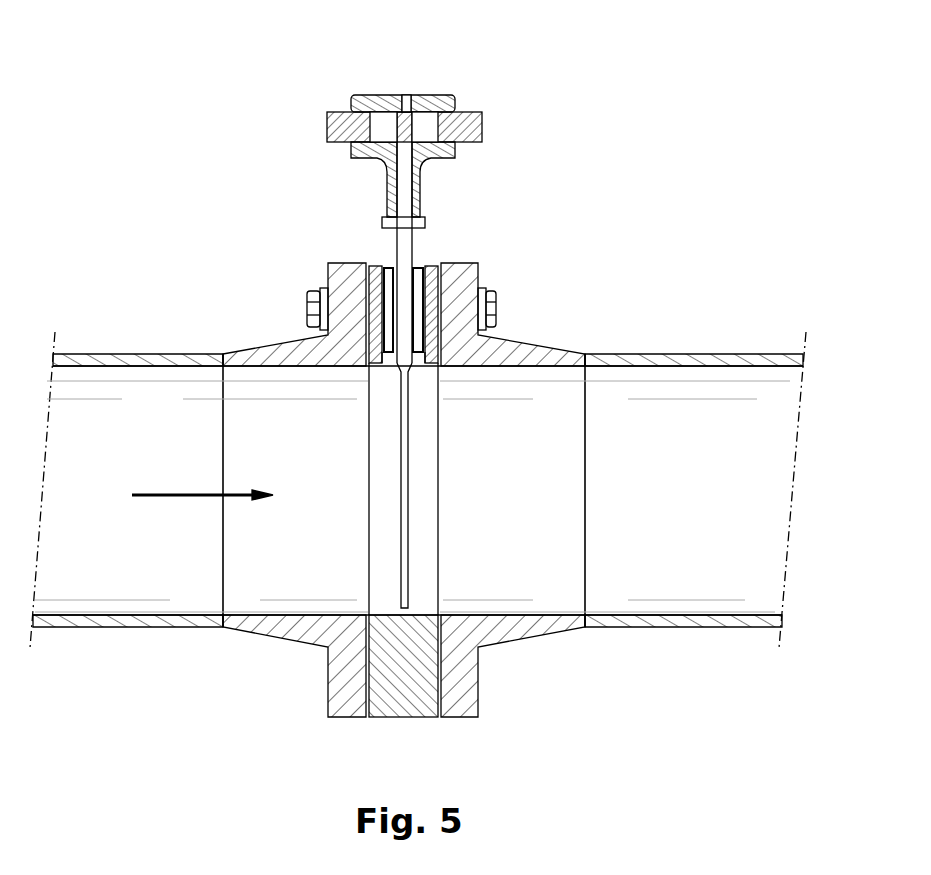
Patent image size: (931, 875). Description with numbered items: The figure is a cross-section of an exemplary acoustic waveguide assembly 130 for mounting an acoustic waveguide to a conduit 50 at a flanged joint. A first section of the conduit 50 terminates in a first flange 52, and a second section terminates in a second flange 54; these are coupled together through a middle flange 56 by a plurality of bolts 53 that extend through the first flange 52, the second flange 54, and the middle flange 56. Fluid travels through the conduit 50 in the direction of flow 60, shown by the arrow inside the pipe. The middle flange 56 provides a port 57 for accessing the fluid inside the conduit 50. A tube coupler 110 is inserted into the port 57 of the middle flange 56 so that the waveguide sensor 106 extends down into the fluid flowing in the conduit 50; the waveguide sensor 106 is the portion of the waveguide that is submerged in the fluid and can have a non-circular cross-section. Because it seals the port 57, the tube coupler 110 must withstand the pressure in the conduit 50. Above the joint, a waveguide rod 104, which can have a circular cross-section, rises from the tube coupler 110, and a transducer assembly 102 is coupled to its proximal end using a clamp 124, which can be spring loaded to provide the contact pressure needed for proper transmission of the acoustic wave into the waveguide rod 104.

The conduit 50 is at (647, 360).
The first flange 52 is at (505, 358).
The bolts 53 is at (493, 308).
The second flange 54 is at (280, 356).
The middle flange 56 is at (372, 264).
The port 57 is at (413, 362).
The direction of flow 60 is at (158, 493).
The transducer assembly 102 is at (383, 120).
The waveguide rod 104 is at (395, 243).
The waveguide sensor 106 is at (405, 495).
The tube coupler 110 is at (417, 267).
The clamp 124 is at (345, 108).
The acoustic waveguide assembly 130 is at (503, 154).